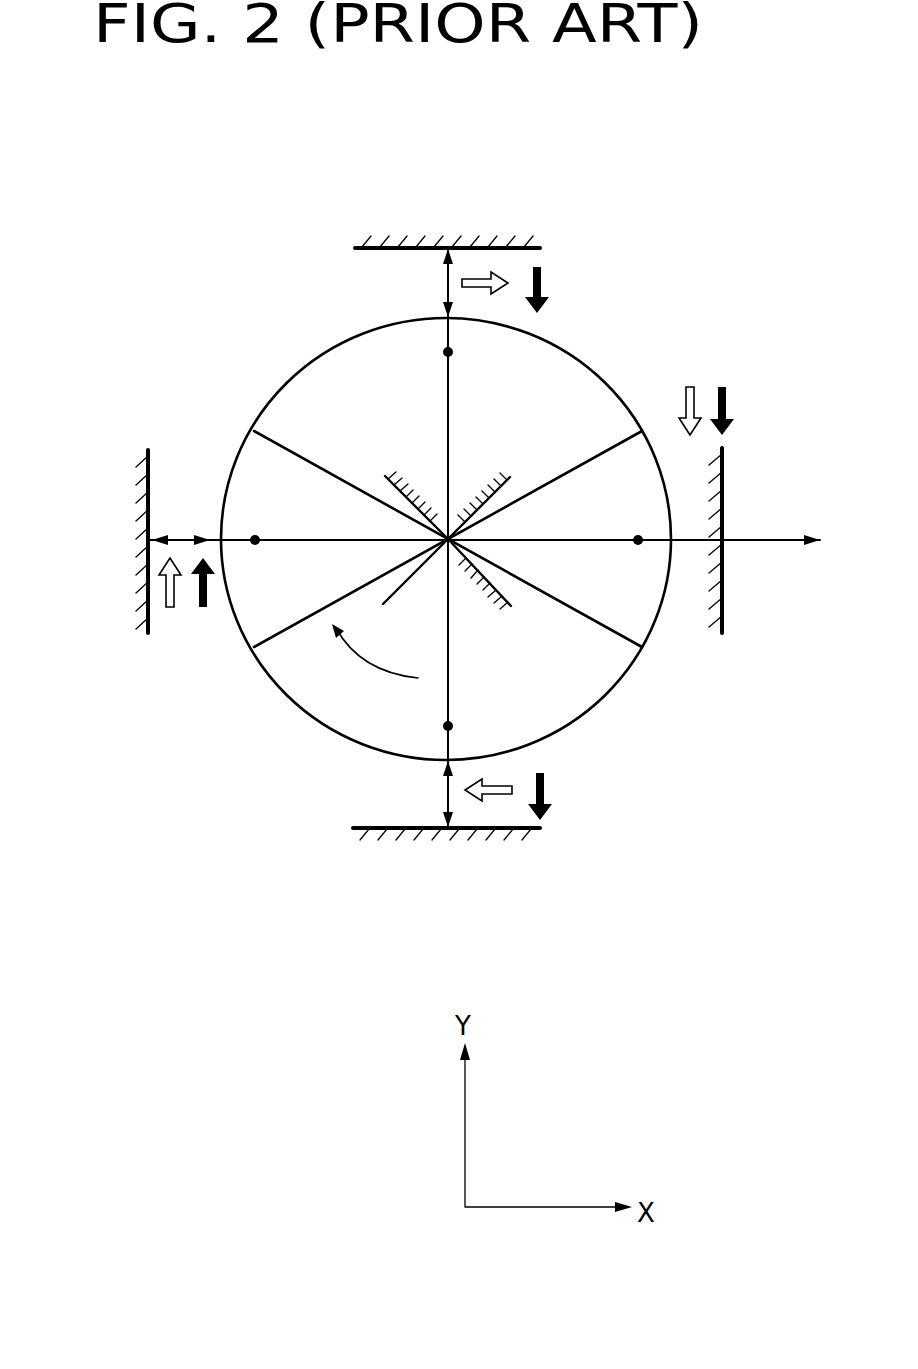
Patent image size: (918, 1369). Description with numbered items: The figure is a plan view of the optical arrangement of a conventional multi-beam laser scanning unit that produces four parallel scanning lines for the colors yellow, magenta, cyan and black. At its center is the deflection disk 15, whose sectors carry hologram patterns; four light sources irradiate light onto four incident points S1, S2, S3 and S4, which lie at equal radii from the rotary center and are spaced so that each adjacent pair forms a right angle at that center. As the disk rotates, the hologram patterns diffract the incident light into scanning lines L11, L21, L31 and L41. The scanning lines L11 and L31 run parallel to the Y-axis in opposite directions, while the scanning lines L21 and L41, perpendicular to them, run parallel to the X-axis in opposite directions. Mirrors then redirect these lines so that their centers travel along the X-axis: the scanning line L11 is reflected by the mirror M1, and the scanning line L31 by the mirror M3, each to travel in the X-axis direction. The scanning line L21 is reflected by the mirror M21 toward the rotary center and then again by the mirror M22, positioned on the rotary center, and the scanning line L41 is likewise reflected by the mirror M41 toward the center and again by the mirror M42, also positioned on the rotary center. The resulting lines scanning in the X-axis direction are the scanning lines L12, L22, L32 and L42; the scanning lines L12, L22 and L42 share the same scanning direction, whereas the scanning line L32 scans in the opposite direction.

The deflection disk 15 is at (573, 713).
The mirror M41 is at (402, 242).
The mirror M42 is at (340, 433).
The mirror M22 is at (370, 613).
The mirror M21 is at (395, 833).
The mirror M3 is at (148, 630).
The mirror M1 is at (722, 633).
The scanning line L41 is at (479, 277).
The scanning line L42 is at (543, 286).
The scanning line L31 is at (170, 608).
The scanning line L32 is at (203, 608).
The scanning line L11 is at (690, 386).
The scanning line L12 is at (722, 386).
The scanning line L21 is at (493, 797).
The scanning line L22 is at (545, 823).
The incident point S1 is at (638, 540).
The incident point S2 is at (448, 726).
The incident point S3 is at (255, 540).
The incident point S4 is at (448, 352).